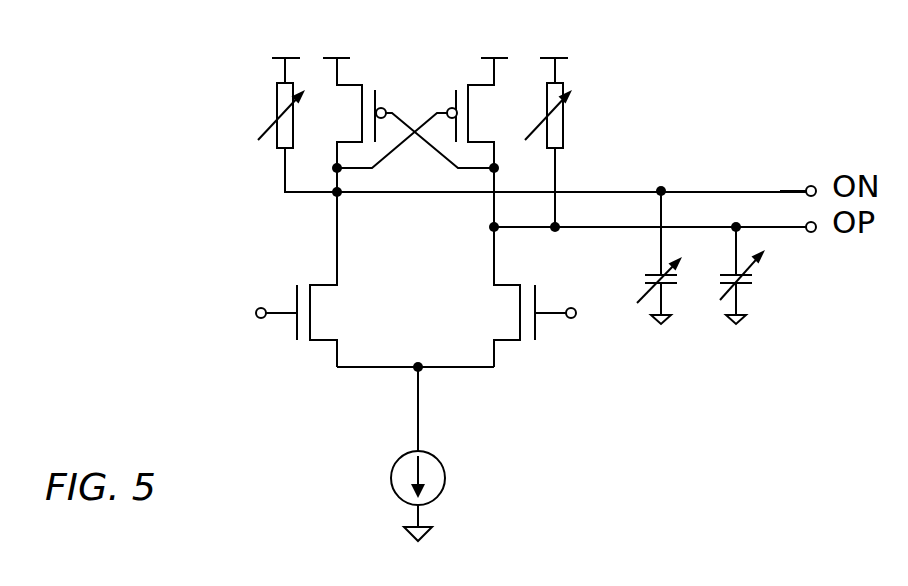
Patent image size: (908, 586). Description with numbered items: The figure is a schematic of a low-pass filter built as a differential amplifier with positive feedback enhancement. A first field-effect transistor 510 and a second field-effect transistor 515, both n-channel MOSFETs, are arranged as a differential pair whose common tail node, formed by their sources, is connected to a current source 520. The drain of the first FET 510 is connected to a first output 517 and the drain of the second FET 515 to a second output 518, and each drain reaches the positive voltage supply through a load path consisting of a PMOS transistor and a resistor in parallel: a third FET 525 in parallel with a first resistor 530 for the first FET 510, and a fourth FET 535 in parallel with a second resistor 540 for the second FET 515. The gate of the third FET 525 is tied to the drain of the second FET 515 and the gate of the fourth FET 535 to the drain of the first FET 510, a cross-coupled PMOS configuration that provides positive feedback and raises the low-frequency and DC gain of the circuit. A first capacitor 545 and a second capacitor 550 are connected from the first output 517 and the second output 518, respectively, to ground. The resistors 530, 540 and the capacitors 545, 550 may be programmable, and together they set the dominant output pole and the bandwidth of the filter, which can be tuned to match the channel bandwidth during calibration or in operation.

The first field-effect transistor 510 is at (305, 352).
The second field-effect transistor 515 is at (528, 353).
The first output 517 is at (790, 190).
The second output 518 is at (790, 229).
The current source 520 is at (383, 475).
The third field-effect transistor 525 is at (367, 77).
The fourth field-effect transistor 535 is at (462, 77).
The first resistor 530 is at (268, 102).
The second resistor 540 is at (568, 127).
The first capacitor 545 is at (627, 277).
The second capacitor 550 is at (765, 275).